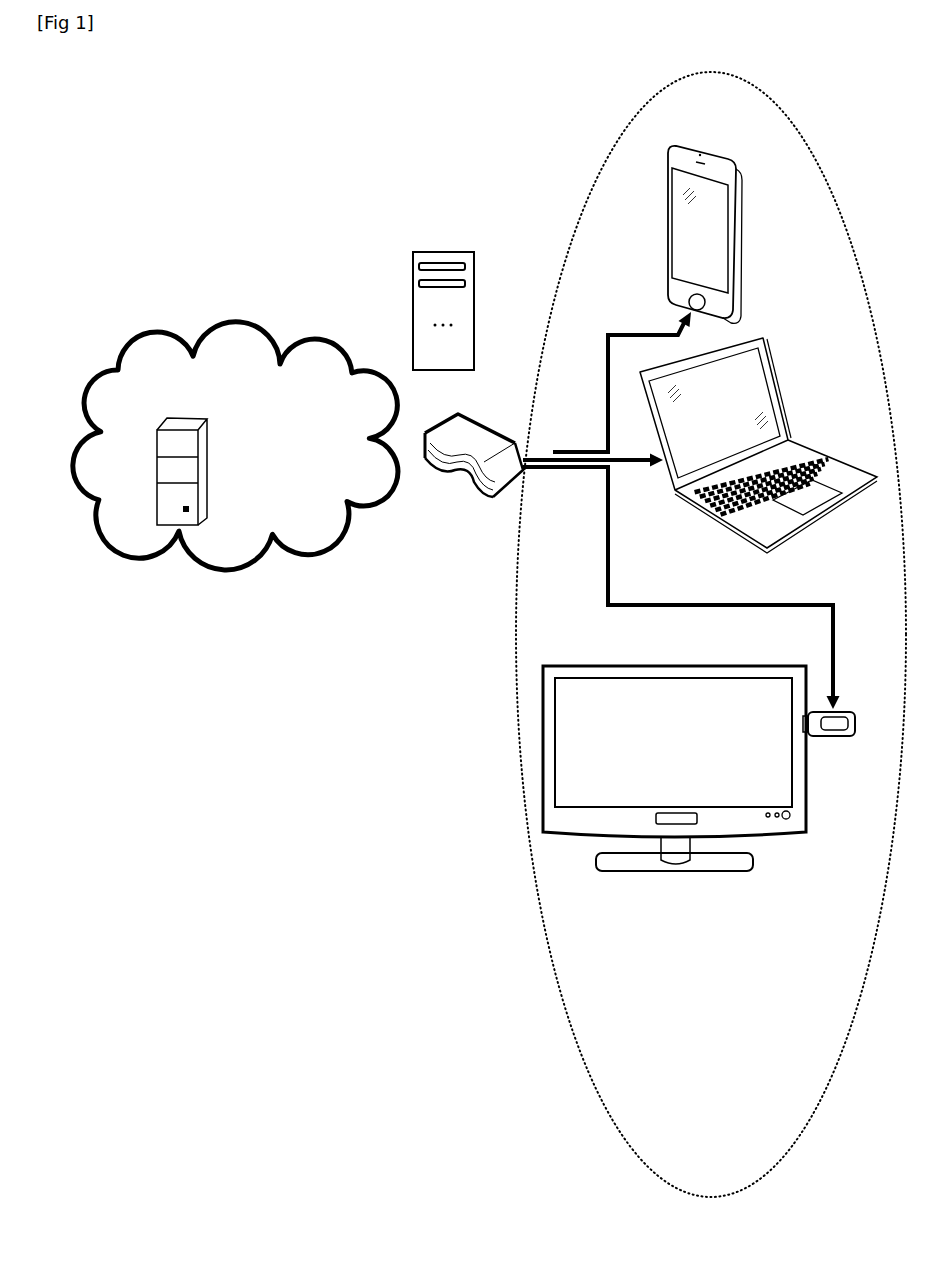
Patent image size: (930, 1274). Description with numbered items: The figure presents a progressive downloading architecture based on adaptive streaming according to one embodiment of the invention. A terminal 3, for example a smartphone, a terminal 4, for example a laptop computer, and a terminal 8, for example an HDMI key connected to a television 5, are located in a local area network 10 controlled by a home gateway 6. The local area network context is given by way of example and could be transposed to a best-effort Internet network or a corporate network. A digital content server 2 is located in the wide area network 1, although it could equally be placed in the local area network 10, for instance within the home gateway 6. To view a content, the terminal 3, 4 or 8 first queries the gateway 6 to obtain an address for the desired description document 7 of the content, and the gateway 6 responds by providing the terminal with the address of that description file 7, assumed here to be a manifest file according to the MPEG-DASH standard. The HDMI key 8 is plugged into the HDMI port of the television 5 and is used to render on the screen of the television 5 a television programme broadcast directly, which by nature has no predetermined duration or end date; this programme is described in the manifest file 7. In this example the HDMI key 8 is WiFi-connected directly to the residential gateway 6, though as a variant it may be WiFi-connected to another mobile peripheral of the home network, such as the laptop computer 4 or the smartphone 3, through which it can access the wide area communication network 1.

The wide area network 1 is at (233, 322).
The digital content server 2 is at (212, 417).
The terminal 3 is at (725, 163).
The terminal 4 is at (748, 370).
The television 5 is at (720, 840).
The home gateway 6 is at (486, 416).
The description document 7 is at (480, 282).
The terminal 8 is at (843, 738).
The local area network 10 is at (516, 733).